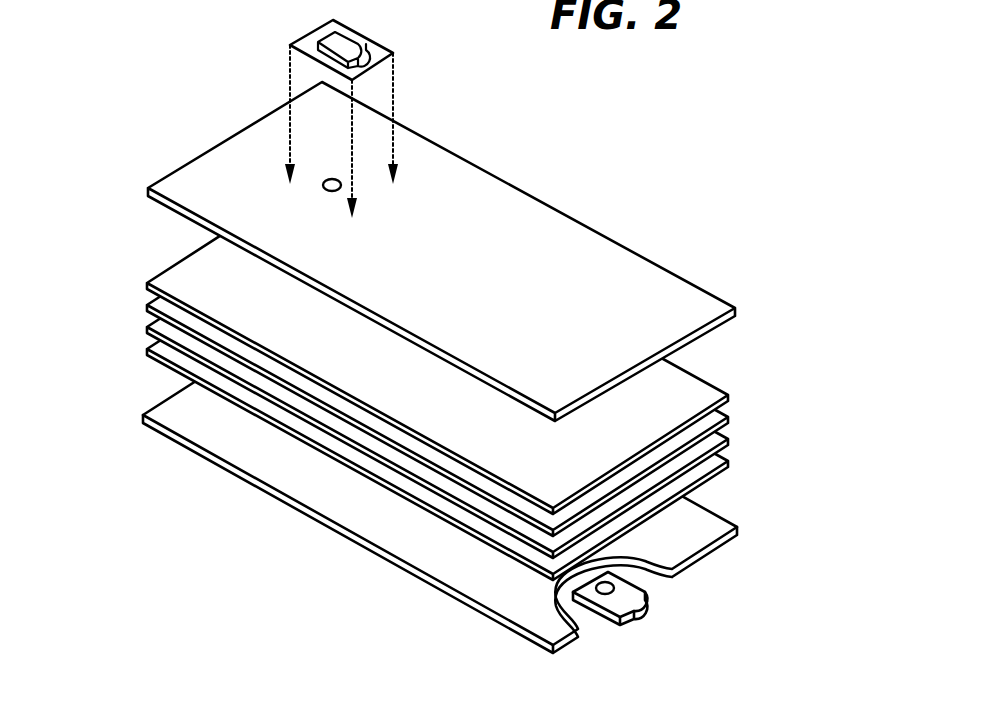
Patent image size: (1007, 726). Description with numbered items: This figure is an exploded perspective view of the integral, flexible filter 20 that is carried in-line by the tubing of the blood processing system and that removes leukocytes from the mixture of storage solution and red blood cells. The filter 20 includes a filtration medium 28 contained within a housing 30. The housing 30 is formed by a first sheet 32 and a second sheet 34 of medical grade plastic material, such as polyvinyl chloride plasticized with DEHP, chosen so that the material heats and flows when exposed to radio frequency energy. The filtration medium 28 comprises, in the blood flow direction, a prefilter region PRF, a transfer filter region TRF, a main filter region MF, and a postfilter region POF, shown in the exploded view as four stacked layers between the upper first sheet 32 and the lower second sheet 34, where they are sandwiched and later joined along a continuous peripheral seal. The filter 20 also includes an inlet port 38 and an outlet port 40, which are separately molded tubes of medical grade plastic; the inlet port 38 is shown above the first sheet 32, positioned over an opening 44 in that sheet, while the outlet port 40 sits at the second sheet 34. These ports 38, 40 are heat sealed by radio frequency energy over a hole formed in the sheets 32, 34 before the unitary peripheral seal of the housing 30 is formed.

The flexible filter 20 is at (778, 352).
The filtration medium 28 is at (122, 320).
The filter housing 30 is at (202, 418).
The first sheet 32 is at (520, 222).
The second sheet 34 is at (368, 505).
The inlet port 38 is at (330, 32).
The outlet port 40 is at (643, 588).
The aperture in top plate 44 is at (325, 188).
The prefilter region PRF is at (733, 390).
The transfer filter region TRF is at (733, 420).
The main filter region MF is at (733, 447).
The postfilter region POF is at (733, 472).